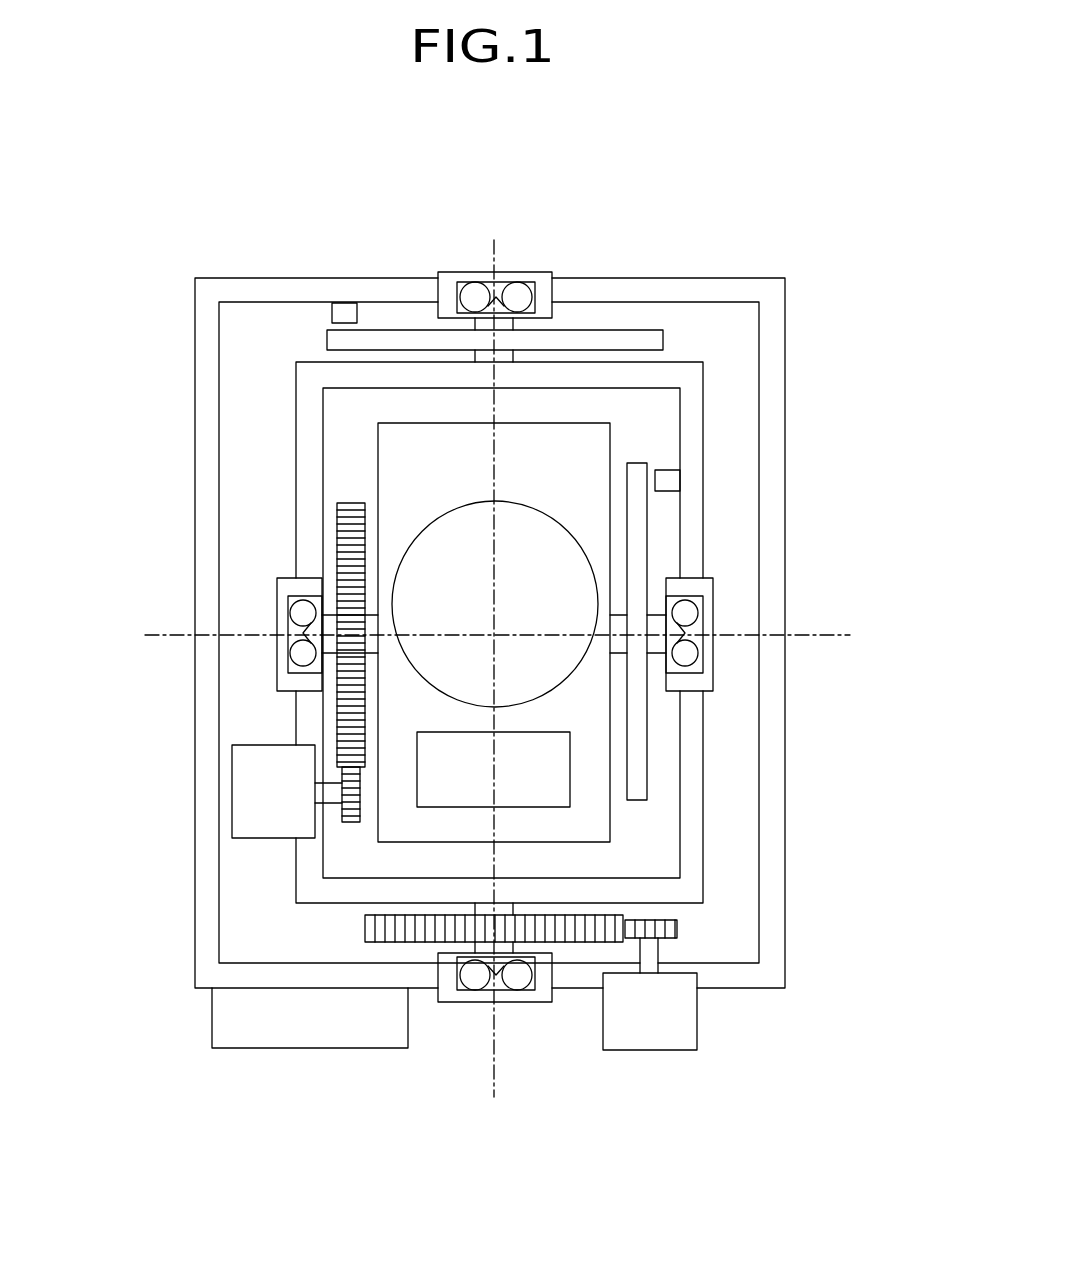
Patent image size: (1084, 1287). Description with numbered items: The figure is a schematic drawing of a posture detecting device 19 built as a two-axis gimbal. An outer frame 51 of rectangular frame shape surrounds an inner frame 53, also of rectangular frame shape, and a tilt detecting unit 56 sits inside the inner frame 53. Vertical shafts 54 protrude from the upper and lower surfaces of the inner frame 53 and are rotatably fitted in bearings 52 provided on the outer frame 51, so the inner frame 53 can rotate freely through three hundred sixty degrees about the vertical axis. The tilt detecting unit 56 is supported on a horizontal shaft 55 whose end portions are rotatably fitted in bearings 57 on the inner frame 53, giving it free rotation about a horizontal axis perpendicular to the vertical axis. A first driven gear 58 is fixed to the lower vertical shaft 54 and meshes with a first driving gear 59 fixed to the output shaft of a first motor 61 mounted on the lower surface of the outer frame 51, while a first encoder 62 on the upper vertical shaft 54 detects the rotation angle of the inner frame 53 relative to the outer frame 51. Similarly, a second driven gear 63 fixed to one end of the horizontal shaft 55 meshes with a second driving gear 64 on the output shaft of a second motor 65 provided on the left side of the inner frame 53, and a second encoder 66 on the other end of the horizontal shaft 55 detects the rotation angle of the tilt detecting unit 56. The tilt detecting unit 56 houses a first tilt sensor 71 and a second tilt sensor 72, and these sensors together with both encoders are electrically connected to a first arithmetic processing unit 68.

The posture detecting device 19 is at (498, 568).
The outer frame 51 is at (722, 277).
The bearing 52 is at (550, 272).
The inner frame 53 is at (703, 362).
The vertical shaft 54 is at (513, 325).
The horizontal shaft 55 is at (655, 612).
The tilt detecting unit 56 is at (612, 442).
The bearing 57 is at (277, 593).
The first driven gear 58 is at (365, 927).
The first driving gear 59 is at (677, 927).
The first motor 61 is at (697, 1023).
The first encoder 62 is at (370, 310).
The second driven gear 63 is at (355, 503).
The second driving gear 64 is at (360, 818).
The second motor 65 is at (232, 820).
The second encoder 66 is at (664, 454).
The first arithmetic processing unit 68 is at (300, 1048).
The first tilt sensor 71 is at (520, 500).
The second tilt sensor 72 is at (540, 732).